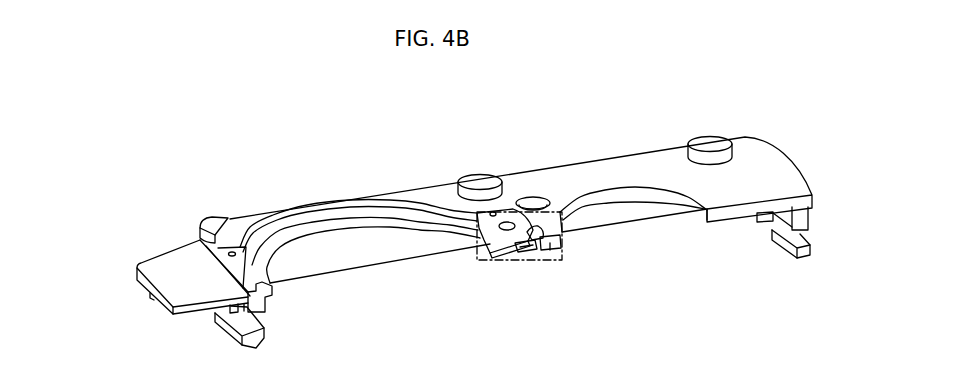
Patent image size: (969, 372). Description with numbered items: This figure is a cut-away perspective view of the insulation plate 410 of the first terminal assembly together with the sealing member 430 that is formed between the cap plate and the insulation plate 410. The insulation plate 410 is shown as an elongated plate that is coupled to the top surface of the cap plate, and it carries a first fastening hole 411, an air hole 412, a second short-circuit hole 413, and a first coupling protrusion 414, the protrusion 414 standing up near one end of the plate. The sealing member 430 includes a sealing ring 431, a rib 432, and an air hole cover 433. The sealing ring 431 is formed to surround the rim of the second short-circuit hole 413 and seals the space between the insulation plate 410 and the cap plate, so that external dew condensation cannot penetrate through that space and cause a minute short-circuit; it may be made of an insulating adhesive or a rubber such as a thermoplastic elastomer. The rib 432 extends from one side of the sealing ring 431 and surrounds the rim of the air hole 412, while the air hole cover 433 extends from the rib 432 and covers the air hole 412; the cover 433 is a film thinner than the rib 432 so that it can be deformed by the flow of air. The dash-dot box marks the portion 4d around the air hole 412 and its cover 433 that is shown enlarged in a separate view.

The insulation plate 410 is at (667, 163).
The first fastening hole 411 is at (618, 198).
The air hole 412 is at (527, 247).
The second short-circuit hole 413 is at (327, 222).
The first coupling protrusion 414 is at (215, 222).
The sealing member 430 is at (480, 166).
The sealing ring 431 is at (400, 193).
The rib 432 is at (490, 212).
The air hole cover 433 is at (540, 182).
The portion 4d is at (565, 256).